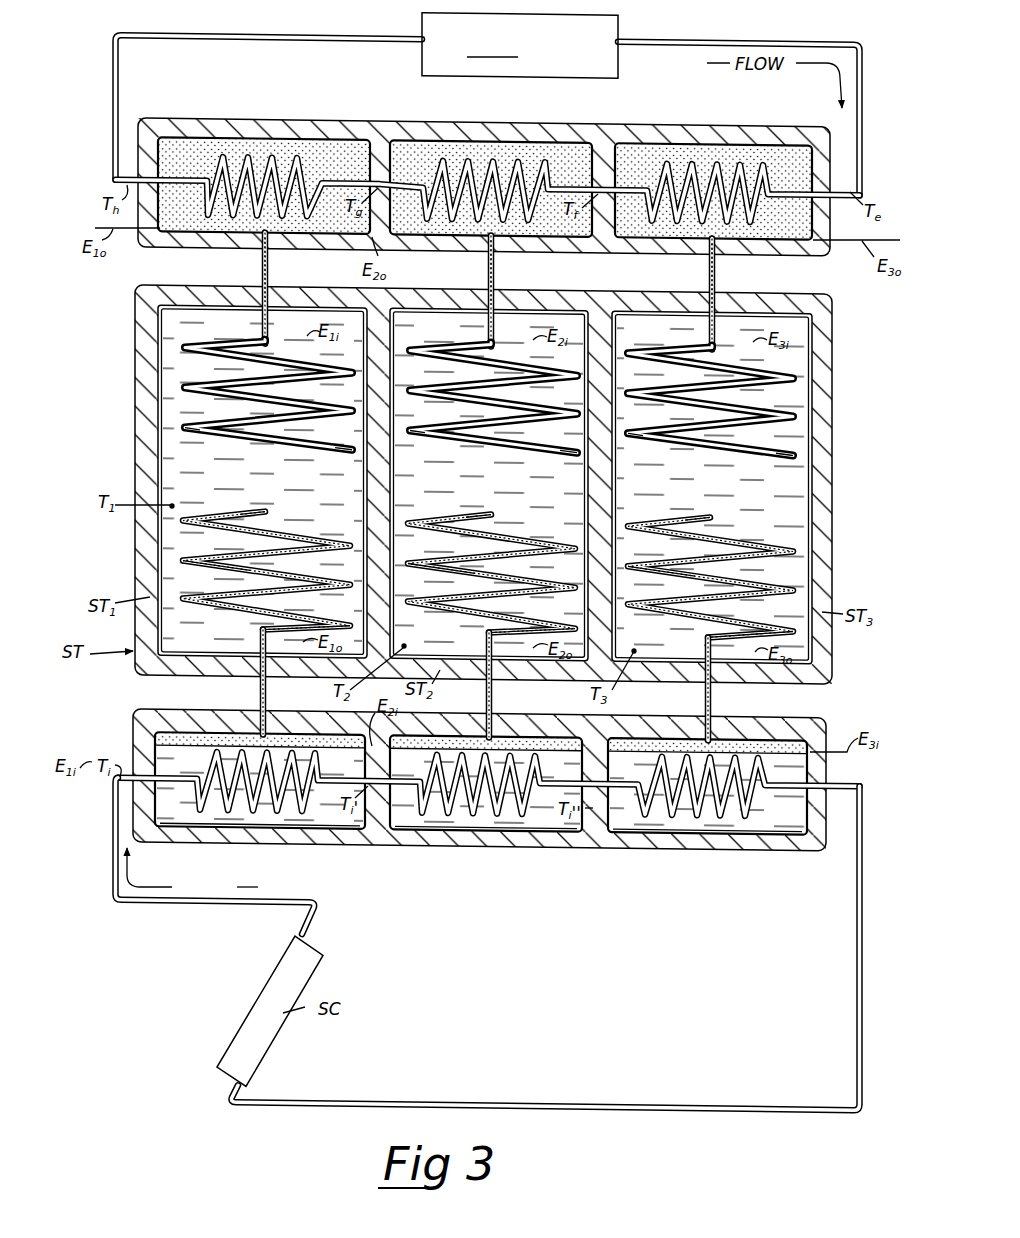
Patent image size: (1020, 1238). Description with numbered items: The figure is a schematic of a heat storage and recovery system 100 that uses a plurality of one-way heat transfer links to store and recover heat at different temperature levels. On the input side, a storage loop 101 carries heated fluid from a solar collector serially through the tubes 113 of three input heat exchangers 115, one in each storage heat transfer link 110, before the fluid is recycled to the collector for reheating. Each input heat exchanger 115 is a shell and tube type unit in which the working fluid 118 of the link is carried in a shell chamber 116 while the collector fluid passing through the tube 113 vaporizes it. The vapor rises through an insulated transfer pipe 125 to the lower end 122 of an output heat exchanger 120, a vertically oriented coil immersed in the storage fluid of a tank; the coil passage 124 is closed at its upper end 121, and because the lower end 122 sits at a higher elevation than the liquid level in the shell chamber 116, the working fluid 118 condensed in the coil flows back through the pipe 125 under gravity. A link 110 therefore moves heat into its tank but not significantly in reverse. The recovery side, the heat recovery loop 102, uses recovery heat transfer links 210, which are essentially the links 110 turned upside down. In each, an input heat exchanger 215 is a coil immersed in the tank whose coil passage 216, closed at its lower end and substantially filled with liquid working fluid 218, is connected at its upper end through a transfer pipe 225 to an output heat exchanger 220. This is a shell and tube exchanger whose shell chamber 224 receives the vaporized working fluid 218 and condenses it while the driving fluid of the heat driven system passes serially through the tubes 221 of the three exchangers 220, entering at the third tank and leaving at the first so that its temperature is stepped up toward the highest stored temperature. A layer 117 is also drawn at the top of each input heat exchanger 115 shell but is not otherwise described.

The heat storage and recovery system 100 is at (130, 544).
The storage loop 101 is at (180, 975).
The heat recovery loop 102 is at (100, 179).
The storage heat transfer link 110 is at (198, 690).
The tube 113 is at (255, 802).
The input heat exchanger 115 is at (365, 827).
The shell chamber 116 is at (312, 822).
The phase change material layer 117 is at (160, 736).
The working fluid 118 is at (215, 817).
The output heat exchanger 120 is at (306, 534).
The upper end 121 is at (268, 508).
The lower end 122 is at (262, 632).
The passage 124 is at (226, 572).
The transfer pipe 125 is at (260, 692).
The recovery heat transfer link 210 is at (208, 270).
The input heat exchanger 215 is at (182, 434).
The coil passage 216 is at (302, 418).
The working fluid 218 is at (203, 430).
The output heat exchanger 220 is at (158, 236).
The tube 221 is at (325, 158).
The shell chamber 224 is at (341, 236).
The transfer pipe 225 is at (261, 268).